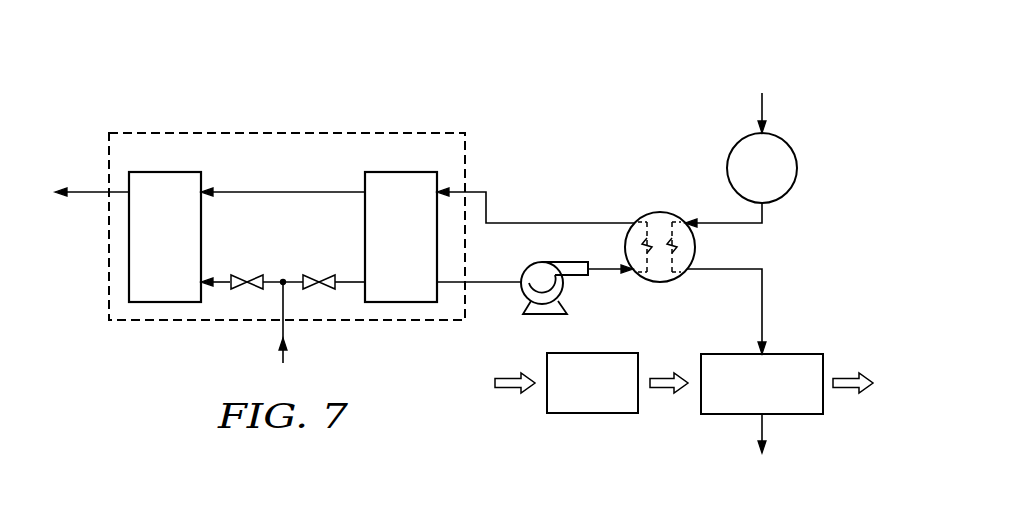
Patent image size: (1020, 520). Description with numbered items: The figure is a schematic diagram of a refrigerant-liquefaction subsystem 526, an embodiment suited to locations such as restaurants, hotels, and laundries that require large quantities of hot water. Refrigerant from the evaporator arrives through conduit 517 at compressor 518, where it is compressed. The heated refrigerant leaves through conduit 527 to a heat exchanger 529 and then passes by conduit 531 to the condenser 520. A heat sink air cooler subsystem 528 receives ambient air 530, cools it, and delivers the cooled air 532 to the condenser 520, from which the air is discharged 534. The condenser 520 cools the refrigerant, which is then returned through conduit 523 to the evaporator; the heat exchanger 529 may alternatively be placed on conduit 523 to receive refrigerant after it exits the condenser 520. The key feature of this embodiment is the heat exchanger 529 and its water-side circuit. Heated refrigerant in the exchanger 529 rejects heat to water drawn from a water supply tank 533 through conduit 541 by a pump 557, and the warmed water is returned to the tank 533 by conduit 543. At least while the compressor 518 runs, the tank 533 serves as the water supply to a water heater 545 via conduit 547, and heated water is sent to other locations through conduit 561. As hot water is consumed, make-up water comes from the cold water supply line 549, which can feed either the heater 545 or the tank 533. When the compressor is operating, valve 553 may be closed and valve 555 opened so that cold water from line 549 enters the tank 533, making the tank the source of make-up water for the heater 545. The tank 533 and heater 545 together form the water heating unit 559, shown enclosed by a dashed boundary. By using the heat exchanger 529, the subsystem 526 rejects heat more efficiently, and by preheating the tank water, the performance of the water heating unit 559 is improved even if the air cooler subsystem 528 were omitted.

The conduit 517 is at (763, 103).
The compressor 518 is at (797, 168).
The condenser 520 is at (736, 415).
The conduit 523 is at (764, 430).
The refrigerant-liquefaction subsystem 526 is at (684, 74).
The conduit 527 is at (760, 225).
The heat sink air cooler subsystem 528 is at (592, 414).
The heat exchanger 529 is at (660, 212).
The ambient air 530 is at (507, 388).
The conduit 531 is at (764, 290).
The air 532 is at (660, 378).
The water supply tank 533 is at (419, 248).
The discharged air 534 is at (842, 378).
The conduit 541 is at (508, 283).
The conduit 543 is at (558, 223).
The water heater 545 is at (183, 248).
The conduit 547 is at (283, 192).
The cold water supply line 549 is at (283, 334).
The valve 553 is at (248, 274).
The valve 555 is at (318, 275).
The pump 557 is at (563, 290).
The water heating unit 559 is at (109, 250).
The conduit 561 is at (89, 192).